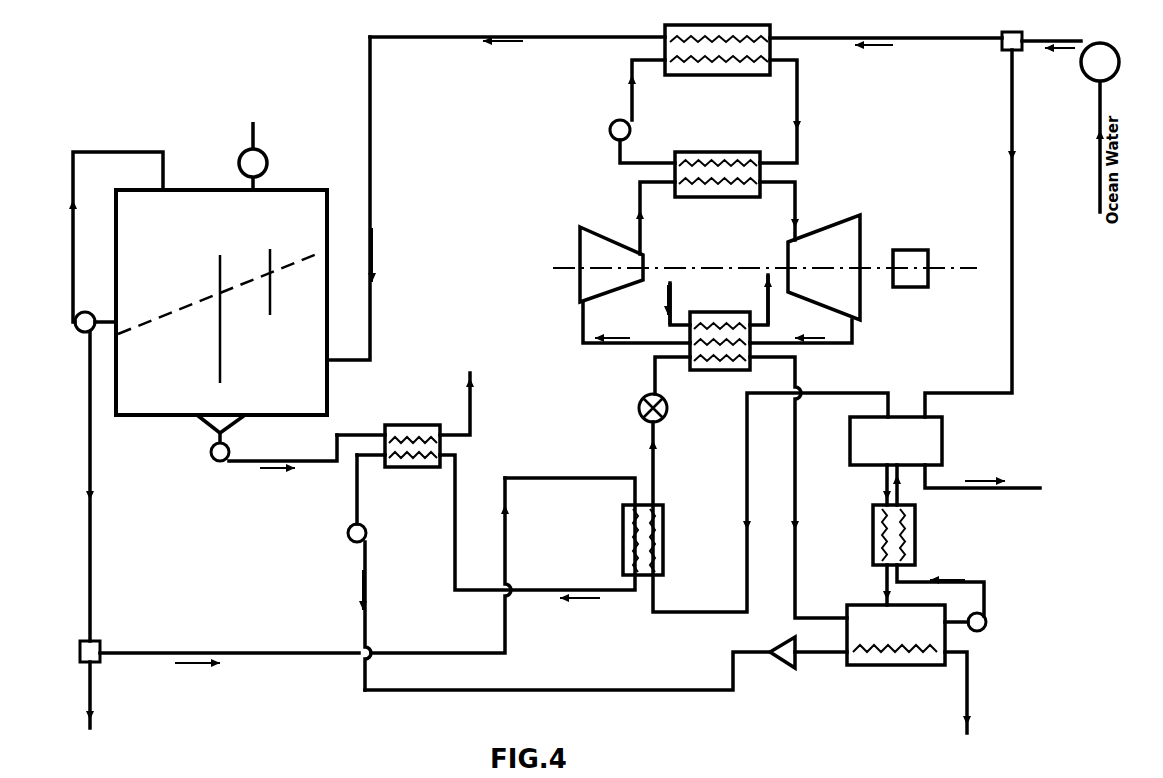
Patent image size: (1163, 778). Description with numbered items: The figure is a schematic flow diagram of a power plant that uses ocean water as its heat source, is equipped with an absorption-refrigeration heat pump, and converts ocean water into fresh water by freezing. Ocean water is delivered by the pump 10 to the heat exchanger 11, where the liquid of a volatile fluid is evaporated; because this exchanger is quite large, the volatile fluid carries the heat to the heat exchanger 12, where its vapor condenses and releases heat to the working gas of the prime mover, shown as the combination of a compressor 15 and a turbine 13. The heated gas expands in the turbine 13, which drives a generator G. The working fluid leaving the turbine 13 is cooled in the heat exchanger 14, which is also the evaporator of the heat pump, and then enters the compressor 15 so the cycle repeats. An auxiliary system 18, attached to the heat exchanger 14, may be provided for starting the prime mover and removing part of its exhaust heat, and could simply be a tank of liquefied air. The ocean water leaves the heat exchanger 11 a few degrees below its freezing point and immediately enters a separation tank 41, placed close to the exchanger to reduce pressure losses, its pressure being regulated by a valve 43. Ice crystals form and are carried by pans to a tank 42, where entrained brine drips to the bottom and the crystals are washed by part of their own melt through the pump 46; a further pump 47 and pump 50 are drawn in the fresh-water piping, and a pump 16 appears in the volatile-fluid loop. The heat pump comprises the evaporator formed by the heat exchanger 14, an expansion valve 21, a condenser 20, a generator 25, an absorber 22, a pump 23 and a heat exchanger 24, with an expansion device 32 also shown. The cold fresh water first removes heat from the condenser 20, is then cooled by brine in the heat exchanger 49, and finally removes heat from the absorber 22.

The pump 10 is at (1112, 46).
The heat exchanger 11 is at (700, 25).
The heat exchanger 12 is at (703, 152).
The turbine 13 is at (862, 224).
The heat exchanger 14 is at (733, 371).
The compressor 15 is at (646, 262).
The pump 16 is at (614, 124).
The auxiliary system 18 is at (765, 293).
The condenser 20 is at (665, 521).
The expansion valve 21 is at (638, 408).
The absorber 22 is at (850, 605).
The pump 23 is at (986, 626).
The heat exchanger 24 is at (916, 542).
The generator 25 is at (944, 425).
The expansion device 32 is at (783, 662).
The separation tank 41 is at (290, 190).
The tank 42 is at (176, 190).
The valve 43 is at (262, 150).
The pump 46 is at (86, 332).
The pump 47 is at (211, 457).
The heat exchanger 49 is at (398, 425).
The pump 50 is at (367, 532).
The generator G is at (918, 250).